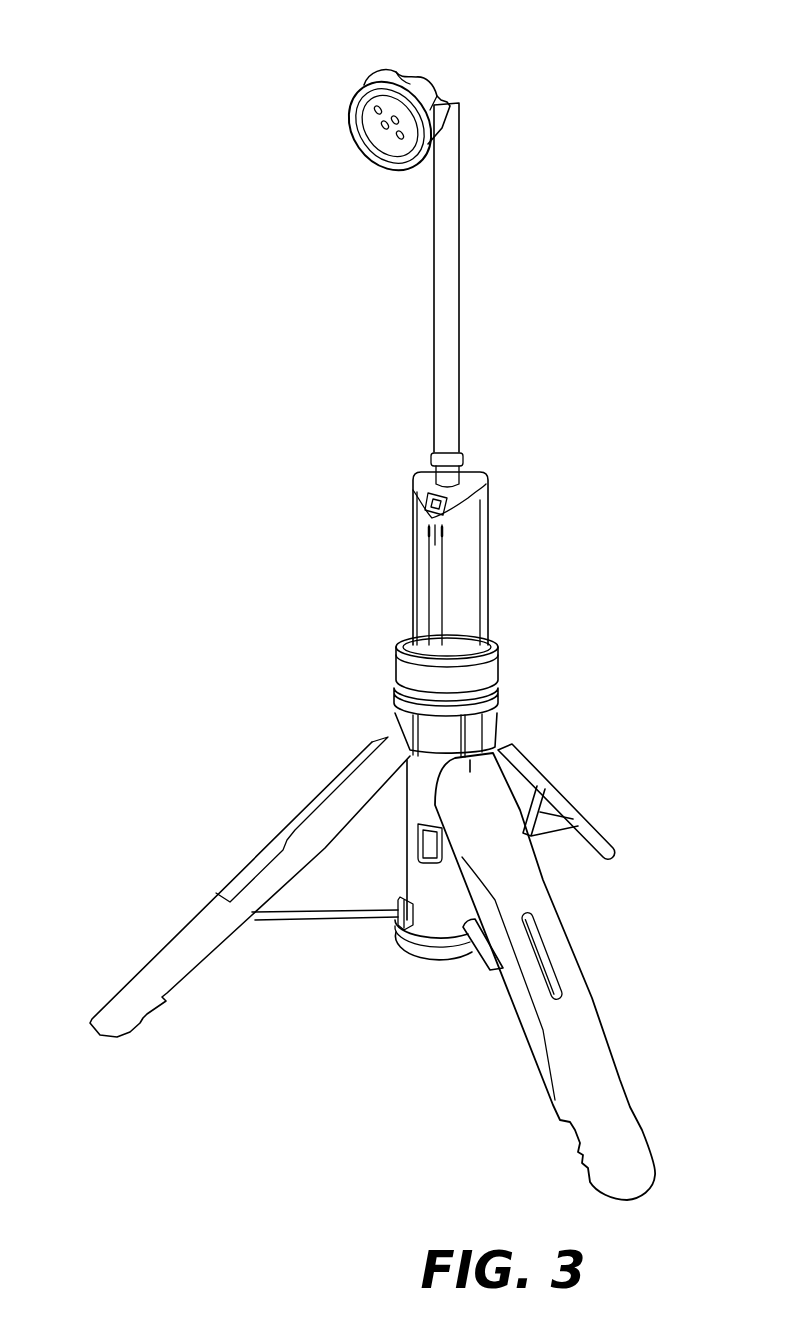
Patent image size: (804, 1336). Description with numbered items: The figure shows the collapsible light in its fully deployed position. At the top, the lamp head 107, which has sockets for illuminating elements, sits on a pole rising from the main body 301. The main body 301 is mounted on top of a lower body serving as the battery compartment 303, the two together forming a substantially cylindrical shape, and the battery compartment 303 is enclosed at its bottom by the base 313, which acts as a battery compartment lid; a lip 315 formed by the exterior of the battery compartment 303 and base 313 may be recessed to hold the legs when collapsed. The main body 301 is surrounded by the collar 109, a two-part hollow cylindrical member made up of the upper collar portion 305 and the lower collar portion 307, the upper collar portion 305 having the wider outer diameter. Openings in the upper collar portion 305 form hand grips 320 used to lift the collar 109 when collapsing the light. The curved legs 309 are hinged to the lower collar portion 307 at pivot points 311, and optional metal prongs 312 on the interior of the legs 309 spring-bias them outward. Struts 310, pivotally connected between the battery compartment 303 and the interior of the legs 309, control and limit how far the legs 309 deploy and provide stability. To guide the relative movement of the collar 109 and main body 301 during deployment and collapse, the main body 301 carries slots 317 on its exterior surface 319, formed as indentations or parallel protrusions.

The lamp head 107 is at (400, 70).
The main body 301 is at (488, 553).
The slots 317 is at (424, 558).
The exterior surface 319 is at (440, 568).
The upper collar portion 305 is at (498, 645).
The collar 109 is at (501, 660).
The hand grips 320 is at (502, 688).
The lower collar portion 307 is at (413, 809).
The struts 310 is at (330, 918).
The battery compartment 303 is at (412, 947).
The lip 315 is at (443, 923).
The base 313 is at (477, 957).
The legs 309 is at (607, 1035).
The pivot points 311 is at (520, 748).
The metal prongs 312 is at (537, 800).